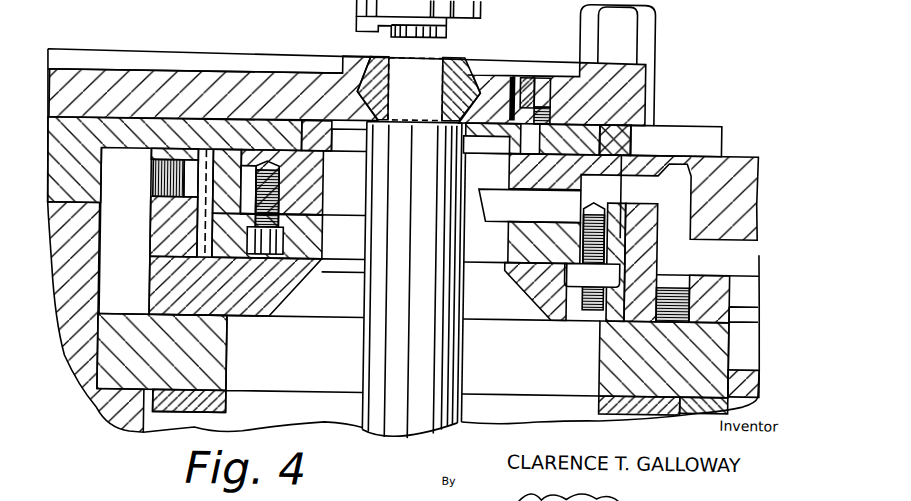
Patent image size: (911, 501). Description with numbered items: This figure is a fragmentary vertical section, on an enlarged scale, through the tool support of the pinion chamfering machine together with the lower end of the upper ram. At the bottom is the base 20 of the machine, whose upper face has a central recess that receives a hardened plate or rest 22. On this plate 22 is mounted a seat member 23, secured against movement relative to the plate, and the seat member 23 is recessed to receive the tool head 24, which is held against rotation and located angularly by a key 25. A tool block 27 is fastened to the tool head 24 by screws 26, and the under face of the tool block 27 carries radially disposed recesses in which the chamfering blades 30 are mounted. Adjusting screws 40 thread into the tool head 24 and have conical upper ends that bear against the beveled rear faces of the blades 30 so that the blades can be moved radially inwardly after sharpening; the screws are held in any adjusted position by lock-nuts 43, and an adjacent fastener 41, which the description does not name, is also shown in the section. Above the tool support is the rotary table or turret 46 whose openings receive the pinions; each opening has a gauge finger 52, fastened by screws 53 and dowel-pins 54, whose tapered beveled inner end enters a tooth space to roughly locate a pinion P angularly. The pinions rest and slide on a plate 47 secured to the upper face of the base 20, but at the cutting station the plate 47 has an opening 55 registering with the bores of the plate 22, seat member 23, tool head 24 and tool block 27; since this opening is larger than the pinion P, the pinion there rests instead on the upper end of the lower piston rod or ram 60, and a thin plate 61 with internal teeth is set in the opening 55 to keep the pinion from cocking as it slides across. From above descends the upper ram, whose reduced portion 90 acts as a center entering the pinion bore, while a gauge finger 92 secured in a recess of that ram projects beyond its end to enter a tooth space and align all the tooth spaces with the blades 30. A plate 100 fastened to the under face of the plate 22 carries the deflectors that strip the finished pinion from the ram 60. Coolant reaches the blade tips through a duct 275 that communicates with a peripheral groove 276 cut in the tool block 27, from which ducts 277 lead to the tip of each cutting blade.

The base 20 is at (79, 377).
The hardened plate or rest 22 is at (601, 368).
The seat member 23 is at (540, 296).
The tool head 24 is at (312, 242).
The key 25 is at (200, 216).
The screws 26 is at (265, 254).
The tool block 27 is at (313, 175).
The chamfering blades 30 is at (507, 196).
The adjusting screws 40 is at (580, 306).
The bolt 41 is at (594, 208).
The lock-nuts 43 is at (612, 270).
The rotary table or turret 46 is at (217, 82).
The plate 47 is at (632, 135).
The gauge finger 52 is at (520, 76).
The screws 53 is at (540, 76).
The dowel-pins 54 is at (514, 77).
The opening 55 is at (340, 134).
The piston rod or ram 60 is at (455, 366).
The thin plate 61 is at (500, 131).
The reduced portion 90 is at (399, 22).
The gauge finger 92 is at (352, 20).
The plate 100 is at (224, 406).
The duct 275 is at (760, 248).
The peripheral groove 276 is at (592, 150).
The ducts 277 is at (612, 112).
The pinion P is at (444, 66).